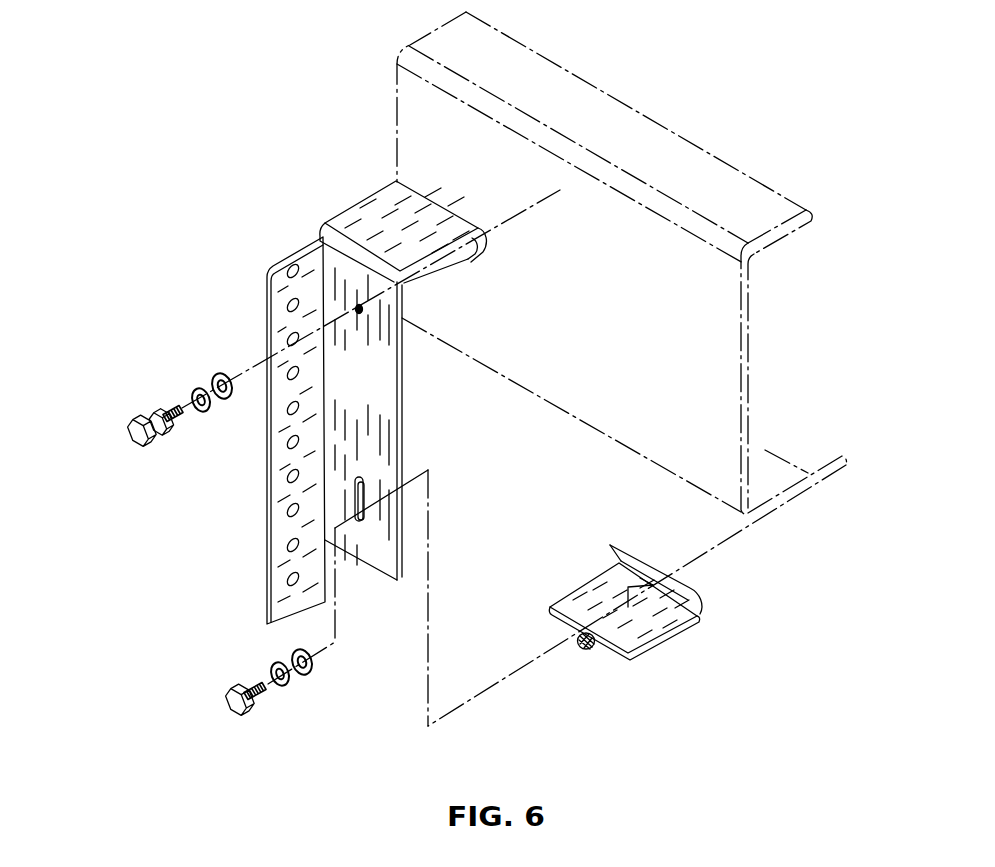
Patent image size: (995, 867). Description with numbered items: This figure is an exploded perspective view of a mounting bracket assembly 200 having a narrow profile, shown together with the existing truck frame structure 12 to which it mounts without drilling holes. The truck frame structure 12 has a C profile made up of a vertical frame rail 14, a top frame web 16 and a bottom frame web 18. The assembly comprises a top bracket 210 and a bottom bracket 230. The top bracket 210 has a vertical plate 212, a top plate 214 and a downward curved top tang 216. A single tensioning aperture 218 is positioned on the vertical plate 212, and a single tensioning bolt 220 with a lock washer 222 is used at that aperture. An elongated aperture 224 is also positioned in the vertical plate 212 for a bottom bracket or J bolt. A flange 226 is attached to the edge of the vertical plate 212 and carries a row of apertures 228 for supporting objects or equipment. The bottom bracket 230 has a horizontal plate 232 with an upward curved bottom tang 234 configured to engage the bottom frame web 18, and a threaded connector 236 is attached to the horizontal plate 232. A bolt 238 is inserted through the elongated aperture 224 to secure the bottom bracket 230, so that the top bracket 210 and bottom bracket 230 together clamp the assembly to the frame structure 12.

The mounting bracket assembly 200 is at (181, 105).
The truck frame structure 12 is at (655, 100).
The vertical frame rail 14 is at (750, 402).
The top frame web 16 is at (763, 247).
The bottom frame web 18 is at (778, 470).
The top bracket 210 is at (302, 216).
The vertical plate 212 is at (379, 388).
The top plate 214 is at (407, 205).
The downward curved top tang 216 is at (478, 228).
The tensioning aperture 218 is at (362, 313).
The tensioning bolt 220 is at (134, 428).
The lock washer 222 is at (158, 413).
The elongated aperture 224 is at (365, 482).
The flange 226 is at (326, 583).
The apertures 228 is at (289, 549).
The bottom bracket 230 is at (701, 579).
The horizontal plate 232 is at (587, 585).
The upward curved bottom tang 234 is at (704, 599).
The threaded connector 236 is at (588, 652).
The bolt 238 is at (238, 714).